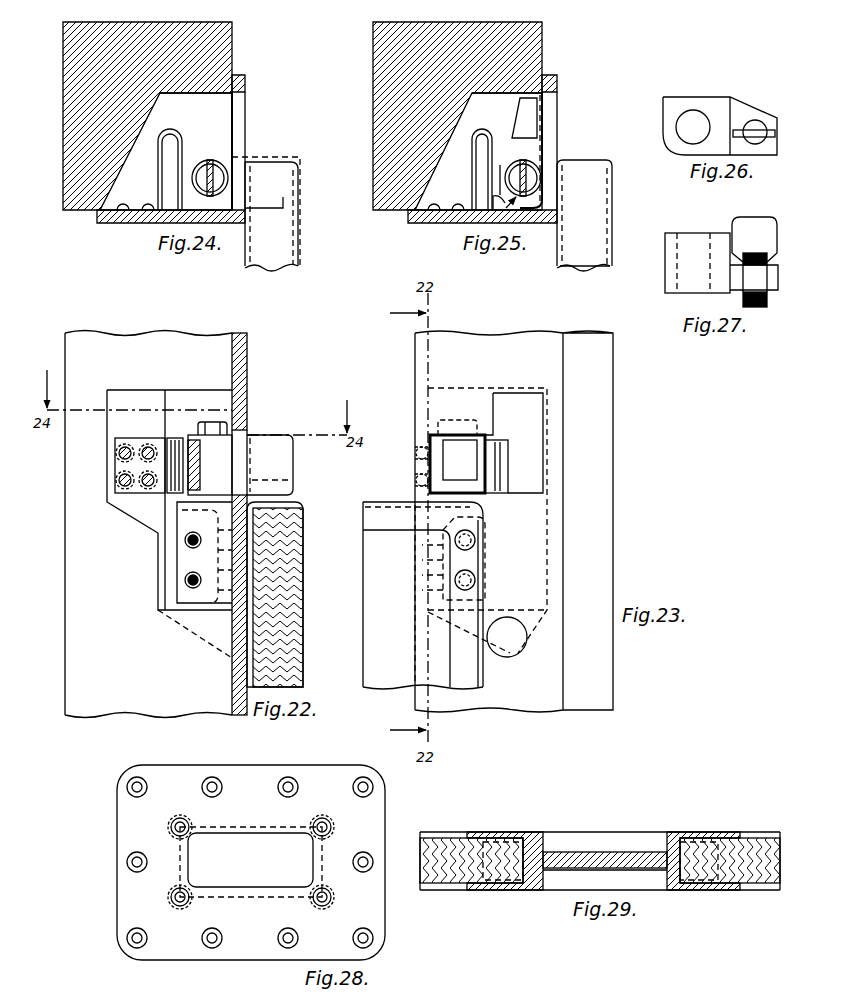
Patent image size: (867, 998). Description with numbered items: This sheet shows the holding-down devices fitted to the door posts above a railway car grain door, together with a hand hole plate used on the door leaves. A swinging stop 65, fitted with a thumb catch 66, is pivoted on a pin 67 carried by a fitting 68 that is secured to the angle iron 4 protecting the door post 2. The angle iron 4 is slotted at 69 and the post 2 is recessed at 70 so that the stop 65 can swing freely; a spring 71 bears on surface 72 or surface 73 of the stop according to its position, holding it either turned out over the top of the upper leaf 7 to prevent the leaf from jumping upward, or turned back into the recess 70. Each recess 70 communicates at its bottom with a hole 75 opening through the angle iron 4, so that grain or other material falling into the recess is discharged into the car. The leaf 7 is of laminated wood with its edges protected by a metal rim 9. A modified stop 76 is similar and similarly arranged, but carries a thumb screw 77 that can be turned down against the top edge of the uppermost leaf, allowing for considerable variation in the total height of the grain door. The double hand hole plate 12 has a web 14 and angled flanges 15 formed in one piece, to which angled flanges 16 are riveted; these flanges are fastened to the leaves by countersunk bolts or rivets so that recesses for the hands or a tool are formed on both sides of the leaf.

In FIG. 24, the door post 2 is at (147, 116).
In FIG. 25, the door post 2 is at (457, 116).
In FIG. 22, the door post 2 is at (82, 665).
In FIG. 23, the door post 2 is at (615, 428).
In FIG. 24, the angle iron 4 is at (246, 85).
In FIG. 25, the angle iron 4 is at (558, 84).
In FIG. 23, the angle iron 4 is at (565, 483).
In FIG. 24, the upper leaf 7 is at (276, 267).
In FIG. 25, the upper leaf 7 is at (576, 267).
In FIG. 22, the upper leaf 7 is at (283, 590).
In FIG. 23, the upper leaf 7 is at (423, 595).
In FIG. 25, the metal rim 9 is at (614, 170).
In FIG. 22, the metal rim 9 is at (306, 506).
In FIG. 23, the metal rim 9 is at (470, 562).
In FIG. 28, the double hand hole plate 12 is at (115, 912).
In FIG. 29, the double hand hole plate 12 is at (600, 847).
In FIG. 28, the web 14 is at (222, 830).
In FIG. 29, the web 14 is at (598, 856).
In FIG. 29, the angled flange 15 is at (509, 833).
In FIG. 27, the angled flange 16 is at (683, 283).
In FIG. 29, the angled flange 16 is at (501, 885).
In FIG. 24, the swinging stop 65 is at (238, 160).
In FIG. 22, the swinging stop 65 is at (210, 465).
In FIG. 24, the thumb catch 66 is at (286, 203).
In FIG. 25, the thumb catch 66 is at (545, 108).
In FIG. 22, the thumb catch 66 is at (296, 461).
In FIG. 24, the pin 67 is at (206, 172).
In FIG. 25, the pin 67 is at (531, 171).
In FIG. 22, the pin 67 is at (214, 428).
In FIG. 25, the fitting 68 is at (490, 200).
In FIG. 22, the fitting 68 is at (190, 519).
In FIG. 24, the slot 69 is at (239, 118).
In FIG. 25, the slot 69 is at (552, 125).
In FIG. 22, the slot 69 is at (243, 436).
In FIG. 24, the recess 70 is at (215, 104).
In FIG. 25, the recess 70 is at (498, 97).
In FIG. 22, the recess 70 is at (117, 417).
In FIG. 23, the recess 70 is at (462, 398).
In FIG. 24, the spring 71 is at (157, 173).
In FIG. 25, the spring 71 is at (471, 150).
In FIG. 22, the spring 71 is at (175, 445).
In FIG. 25, the surface 72 is at (522, 214).
In FIG. 26, the surface 72 is at (663, 115).
In FIG. 25, the surface 73 is at (498, 142).
In FIG. 26, the surface 73 is at (684, 97).
In FIG. 22, the hole 75 is at (234, 638).
In FIG. 23, the hole 75 is at (514, 645).
In FIG. 26, the stop 76 is at (716, 106).
In FIG. 26, the thumb screw 77 is at (762, 140).
In FIG. 27, the thumb screw 77 is at (768, 228).